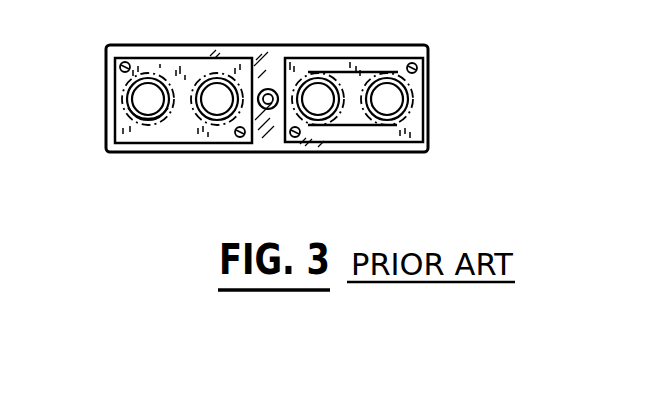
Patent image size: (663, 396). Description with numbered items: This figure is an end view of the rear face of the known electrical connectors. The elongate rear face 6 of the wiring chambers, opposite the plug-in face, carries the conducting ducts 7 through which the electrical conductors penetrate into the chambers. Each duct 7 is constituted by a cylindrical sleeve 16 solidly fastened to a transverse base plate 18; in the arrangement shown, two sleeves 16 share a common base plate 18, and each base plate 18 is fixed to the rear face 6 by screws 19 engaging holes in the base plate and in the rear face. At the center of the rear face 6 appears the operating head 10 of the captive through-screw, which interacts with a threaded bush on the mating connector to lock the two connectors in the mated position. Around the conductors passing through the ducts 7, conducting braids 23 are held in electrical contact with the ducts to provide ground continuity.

The elongate rear face 6 is at (277, 56).
The conducting duct 7 is at (153, 73).
The operating head 10 is at (270, 90).
The cylindrical sleeve 16 is at (213, 77).
The base plate 18 is at (182, 130).
The screw 19 is at (122, 65).
The conducting braid 23 is at (153, 128).